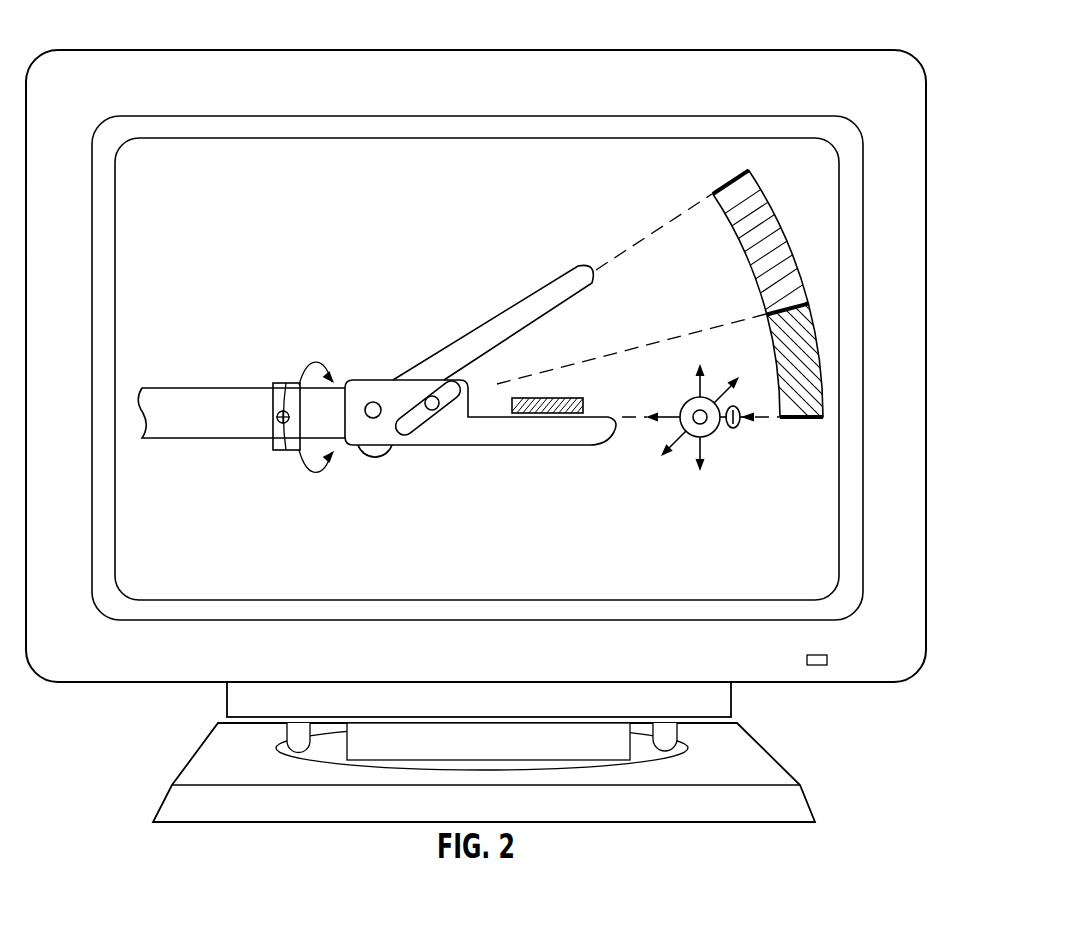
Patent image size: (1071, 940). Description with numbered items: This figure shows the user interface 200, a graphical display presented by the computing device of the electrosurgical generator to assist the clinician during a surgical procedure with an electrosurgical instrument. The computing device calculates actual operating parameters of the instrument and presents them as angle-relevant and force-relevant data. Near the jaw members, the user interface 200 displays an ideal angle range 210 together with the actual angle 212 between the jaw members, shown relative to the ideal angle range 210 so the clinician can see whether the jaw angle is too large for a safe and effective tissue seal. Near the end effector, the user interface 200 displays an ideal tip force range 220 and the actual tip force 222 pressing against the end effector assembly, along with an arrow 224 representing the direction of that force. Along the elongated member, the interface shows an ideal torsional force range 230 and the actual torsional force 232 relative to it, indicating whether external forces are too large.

The user interface 200 is at (135, 36).
The ideal angle range 210 is at (802, 388).
The actual angle 212 is at (789, 203).
The ideal tip force range 220 is at (694, 438).
The actual tip force 222 is at (734, 429).
The arrow 224 is at (754, 418).
The ideal torsional force range 230 is at (281, 463).
The actual torsional force 232 is at (278, 415).